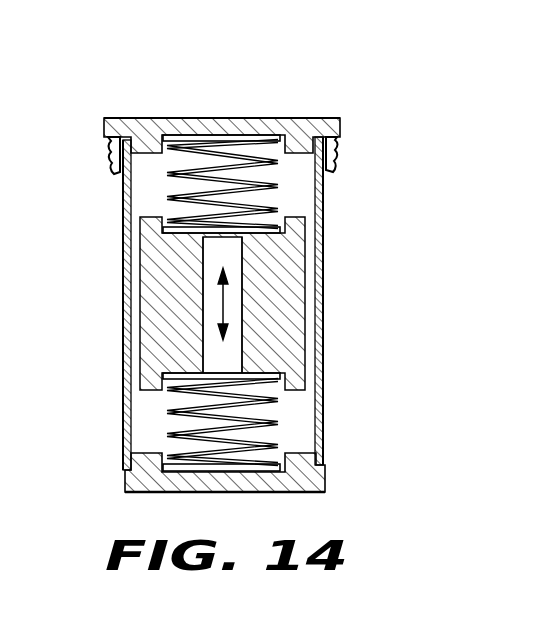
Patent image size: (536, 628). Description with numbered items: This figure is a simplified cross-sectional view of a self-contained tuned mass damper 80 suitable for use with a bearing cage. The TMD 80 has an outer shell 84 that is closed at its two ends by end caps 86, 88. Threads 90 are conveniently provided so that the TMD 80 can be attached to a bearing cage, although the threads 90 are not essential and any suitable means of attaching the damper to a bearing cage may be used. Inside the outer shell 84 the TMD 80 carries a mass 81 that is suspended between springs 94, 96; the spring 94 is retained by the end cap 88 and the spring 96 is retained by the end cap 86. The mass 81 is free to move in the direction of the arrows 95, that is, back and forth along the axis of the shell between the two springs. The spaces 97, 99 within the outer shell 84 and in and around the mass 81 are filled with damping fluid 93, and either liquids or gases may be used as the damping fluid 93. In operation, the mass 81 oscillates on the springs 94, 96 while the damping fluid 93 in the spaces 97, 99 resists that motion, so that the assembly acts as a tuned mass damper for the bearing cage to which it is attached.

The tuned mass damper 80 is at (348, 80).
The mass 81 is at (292, 271).
The outer shell 84 is at (126, 283).
The end cap 86 is at (128, 478).
The end cap 88 is at (225, 117).
The threads 90 is at (99, 152).
The damping fluid 93 is at (143, 191).
The spring 94 is at (272, 216).
The arrows 95 is at (232, 307).
The spring 96 is at (283, 440).
The space 97 is at (305, 184).
The space 99 is at (236, 360).